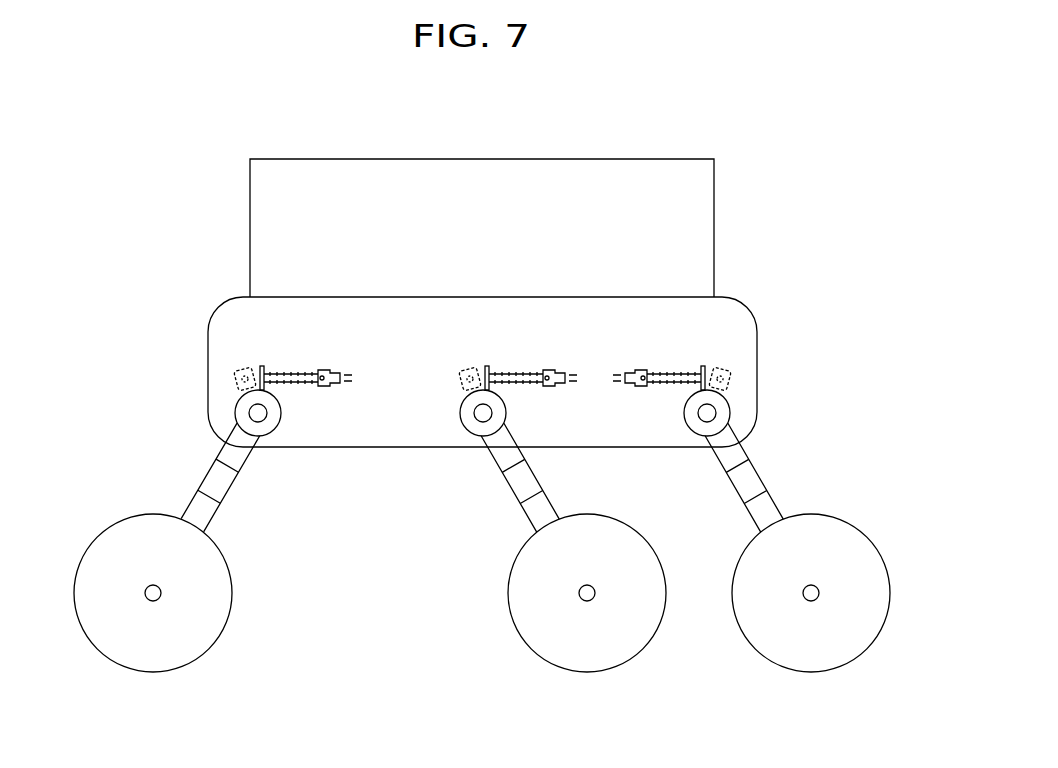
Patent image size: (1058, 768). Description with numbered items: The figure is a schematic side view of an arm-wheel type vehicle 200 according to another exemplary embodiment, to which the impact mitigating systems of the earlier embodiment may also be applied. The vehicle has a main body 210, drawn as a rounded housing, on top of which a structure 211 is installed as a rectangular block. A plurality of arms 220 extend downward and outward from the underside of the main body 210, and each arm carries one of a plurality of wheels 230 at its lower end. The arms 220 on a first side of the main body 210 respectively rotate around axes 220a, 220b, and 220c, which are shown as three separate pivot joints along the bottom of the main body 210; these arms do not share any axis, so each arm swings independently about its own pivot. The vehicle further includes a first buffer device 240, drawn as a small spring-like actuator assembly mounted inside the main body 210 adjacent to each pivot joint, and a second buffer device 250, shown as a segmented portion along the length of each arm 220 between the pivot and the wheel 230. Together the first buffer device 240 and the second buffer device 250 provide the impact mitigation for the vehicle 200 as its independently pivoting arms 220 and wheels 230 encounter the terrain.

The arm-wheel type vehicle 200 is at (516, 119).
The main body 210 is at (740, 314).
The structure 211 is at (703, 213).
The arm 220 is at (190, 505).
The axis 220a is at (258, 417).
The axis 220b is at (487, 413).
The axis 220c is at (712, 413).
The wheel 230 is at (158, 662).
The first buffer device 240 is at (530, 373).
The second buffer device 250 is at (208, 478).